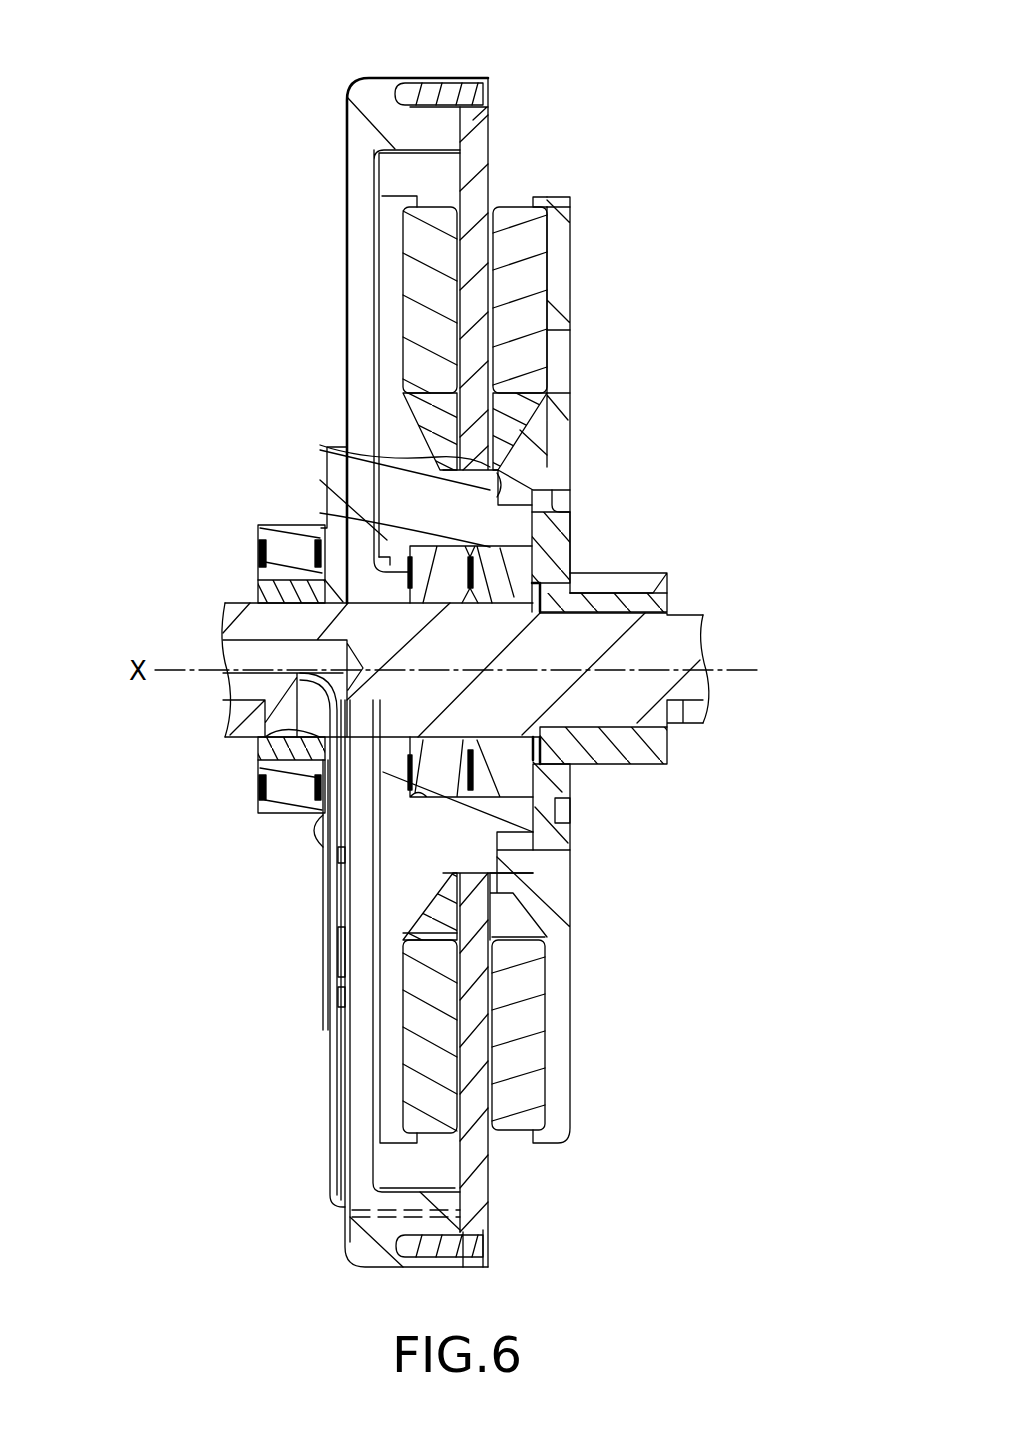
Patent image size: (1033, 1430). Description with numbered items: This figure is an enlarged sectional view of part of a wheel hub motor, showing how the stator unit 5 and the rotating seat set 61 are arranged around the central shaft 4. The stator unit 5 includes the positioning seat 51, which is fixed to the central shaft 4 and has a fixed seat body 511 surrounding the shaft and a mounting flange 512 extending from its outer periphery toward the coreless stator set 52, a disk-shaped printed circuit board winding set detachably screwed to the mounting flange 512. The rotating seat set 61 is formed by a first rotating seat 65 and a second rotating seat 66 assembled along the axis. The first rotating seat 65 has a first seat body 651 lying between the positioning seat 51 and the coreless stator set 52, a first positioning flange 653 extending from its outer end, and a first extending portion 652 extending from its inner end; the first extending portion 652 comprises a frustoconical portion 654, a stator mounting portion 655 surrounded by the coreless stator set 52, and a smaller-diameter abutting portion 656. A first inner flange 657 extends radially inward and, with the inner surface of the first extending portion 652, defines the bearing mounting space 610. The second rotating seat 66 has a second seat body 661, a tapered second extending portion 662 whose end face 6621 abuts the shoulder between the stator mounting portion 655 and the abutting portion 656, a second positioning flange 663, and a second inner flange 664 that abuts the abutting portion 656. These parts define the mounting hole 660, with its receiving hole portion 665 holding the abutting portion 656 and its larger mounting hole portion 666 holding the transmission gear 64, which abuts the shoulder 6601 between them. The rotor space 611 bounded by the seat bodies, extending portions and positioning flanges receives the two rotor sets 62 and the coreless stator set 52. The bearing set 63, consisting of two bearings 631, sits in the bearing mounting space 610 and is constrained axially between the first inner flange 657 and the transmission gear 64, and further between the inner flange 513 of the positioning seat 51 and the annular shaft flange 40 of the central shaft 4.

The stator unit 5 is at (333, 77).
The positioning seat 51 is at (371, 74).
The coreless stator set 52 is at (472, 118).
The rotor set 62 is at (428, 205).
The rotating seat set 61 is at (574, 214).
The second positioning flange 663 is at (541, 199).
The first positioning flange 653 is at (405, 199).
The first rotating seat 65 is at (378, 280).
The first seat body 651 is at (387, 313).
The rotor space 611 is at (425, 388).
The first extending portion 652 is at (242, 398).
The frustoconical portion 654 is at (428, 420).
The stator mounting portion 655 is at (320, 445).
The abutting portion 656 is at (320, 480).
The first inner flange 657 is at (320, 513).
The second extending portion 662 is at (546, 404).
The end face 6621 is at (513, 493).
The second inner flange 664 is at (522, 490).
The shoulder 6601 is at (537, 490).
The mounting hole 660 is at (680, 490).
The mounting hole portion 666 is at (553, 508).
The receiving hole portion 665 is at (548, 518).
The transmission gear 64 is at (667, 592).
The central shaft 4 is at (208, 604).
The annular shaft flange 40 is at (545, 740).
The bearing set 63 is at (510, 777).
The bearing 631 is at (430, 767).
The second rotating seat 66 is at (574, 299).
The second seat body 661 is at (556, 325).
The inner flange 513 is at (397, 755).
The bearing mounting space 610 is at (372, 842).
The fixed seat body 511 is at (363, 1068).
The mounting flange 512 is at (418, 1221).